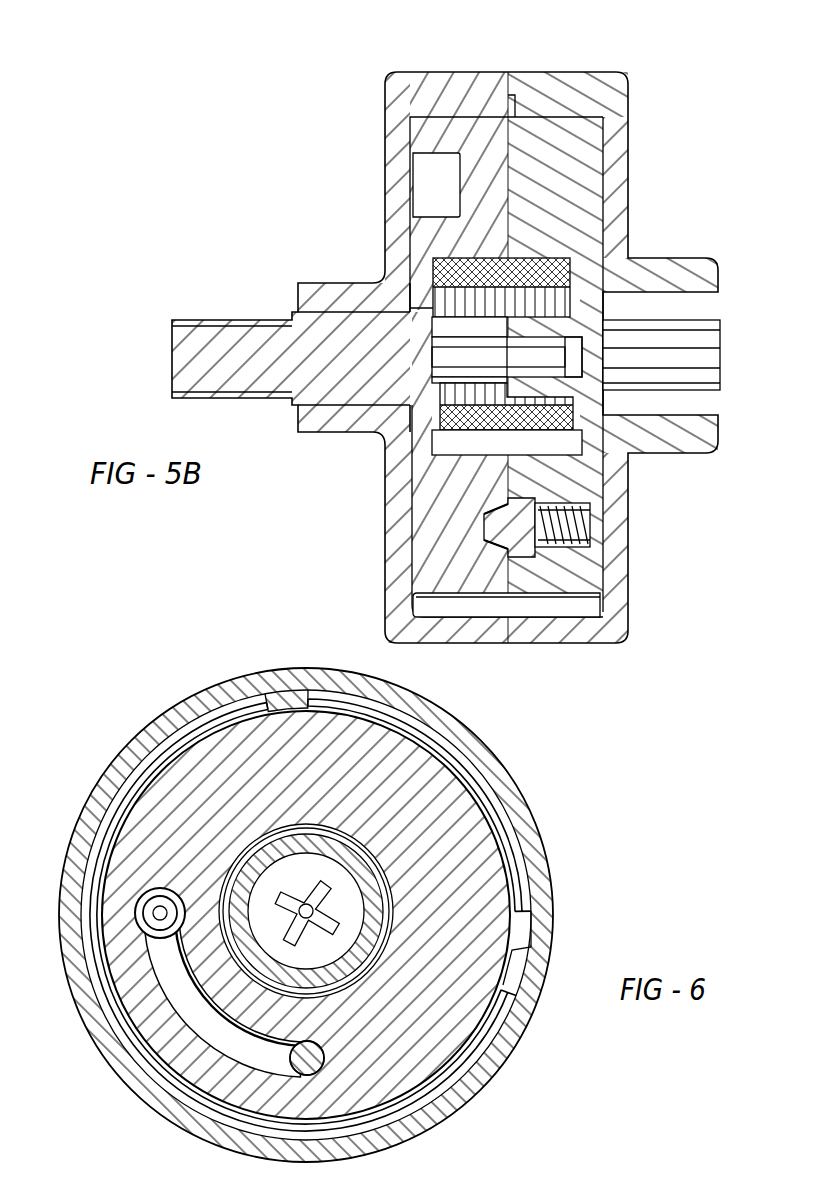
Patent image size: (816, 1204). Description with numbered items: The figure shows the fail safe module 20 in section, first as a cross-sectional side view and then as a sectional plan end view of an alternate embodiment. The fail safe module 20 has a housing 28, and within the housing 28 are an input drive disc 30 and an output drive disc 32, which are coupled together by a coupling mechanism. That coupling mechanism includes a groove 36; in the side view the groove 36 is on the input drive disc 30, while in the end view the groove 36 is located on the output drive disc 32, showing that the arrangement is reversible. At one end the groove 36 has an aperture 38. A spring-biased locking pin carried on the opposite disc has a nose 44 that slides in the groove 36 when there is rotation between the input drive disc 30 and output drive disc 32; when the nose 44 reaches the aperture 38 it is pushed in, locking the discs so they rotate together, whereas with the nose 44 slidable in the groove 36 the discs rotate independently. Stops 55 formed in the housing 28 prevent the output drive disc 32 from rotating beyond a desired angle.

In FIG. 5B, the fail safe module 20 is at (292, 133).
In FIG. 5B, the housing 28 is at (627, 58).
In FIG. 6, the housing 28 is at (500, 778).
In FIG. 5B, the input drive disc 30 is at (433, 238).
In FIG. 5B, the output drive disc 32 is at (590, 166).
In FIG. 6, the output drive disc 32 is at (412, 1025).
In FIG. 5B, the groove 36 is at (494, 545).
In FIG. 6, the groove 36 is at (172, 997).
In FIG. 6, the aperture 38 is at (145, 912).
In FIG. 6, the nose 44 is at (307, 1060).
In FIG. 6, the stops 55 is at (282, 696).